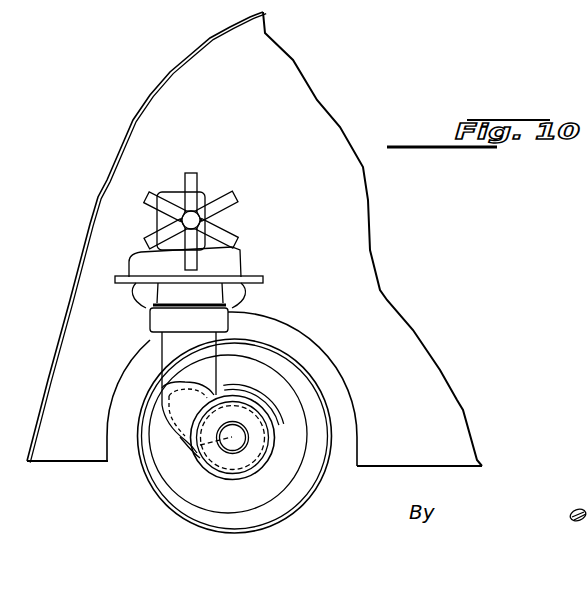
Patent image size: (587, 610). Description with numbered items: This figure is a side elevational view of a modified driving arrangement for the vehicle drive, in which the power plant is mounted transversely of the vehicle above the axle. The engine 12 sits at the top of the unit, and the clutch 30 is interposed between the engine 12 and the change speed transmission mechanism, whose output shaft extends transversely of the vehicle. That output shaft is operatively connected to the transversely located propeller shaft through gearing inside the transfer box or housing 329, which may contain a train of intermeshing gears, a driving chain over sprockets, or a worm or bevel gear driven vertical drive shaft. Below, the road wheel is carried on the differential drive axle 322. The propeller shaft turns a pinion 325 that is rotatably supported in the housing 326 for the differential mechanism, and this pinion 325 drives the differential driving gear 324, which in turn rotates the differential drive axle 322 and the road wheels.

The engine 12 is at (143, 252).
The clutch 30 is at (140, 297).
The transfer box or housing 329 is at (180, 347).
The pinion 325 is at (163, 390).
The housing 326 is at (267, 450).
The differential drive axle 322 is at (222, 447).
The differential driving gear 324 is at (200, 445).